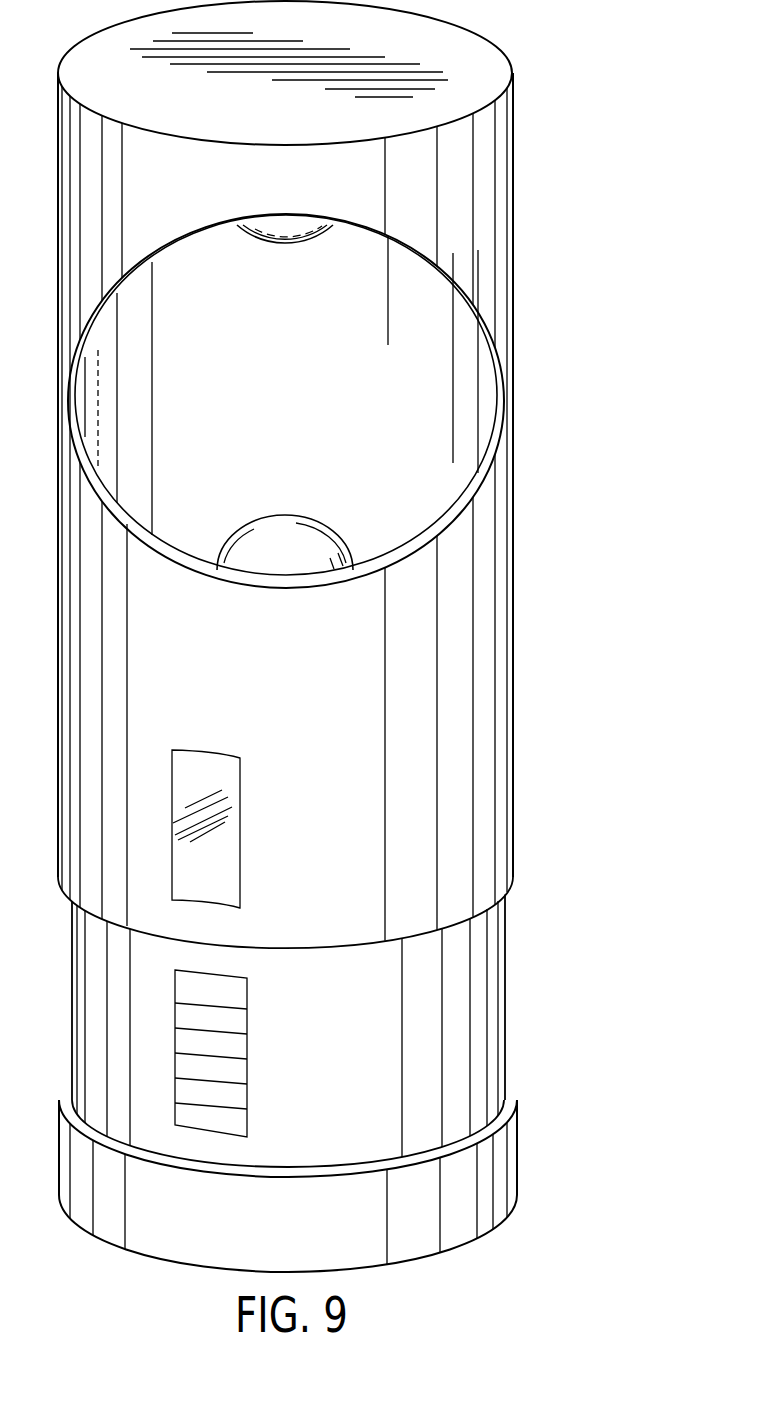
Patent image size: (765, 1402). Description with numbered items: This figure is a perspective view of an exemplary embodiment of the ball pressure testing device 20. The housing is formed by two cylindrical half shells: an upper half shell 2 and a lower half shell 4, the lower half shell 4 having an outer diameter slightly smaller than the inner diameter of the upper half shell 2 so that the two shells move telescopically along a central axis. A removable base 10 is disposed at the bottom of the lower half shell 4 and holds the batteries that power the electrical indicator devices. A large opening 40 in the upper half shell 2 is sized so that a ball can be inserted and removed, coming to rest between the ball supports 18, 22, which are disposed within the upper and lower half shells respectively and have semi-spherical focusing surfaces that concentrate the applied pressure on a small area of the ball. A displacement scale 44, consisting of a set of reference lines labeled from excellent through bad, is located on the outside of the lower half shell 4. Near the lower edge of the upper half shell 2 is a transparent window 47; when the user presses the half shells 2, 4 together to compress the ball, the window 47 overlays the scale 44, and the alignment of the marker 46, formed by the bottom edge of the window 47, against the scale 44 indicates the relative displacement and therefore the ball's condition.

The upper half shell 2 is at (469, 615).
The lower half shell 4 is at (475, 1035).
The removable base 10 is at (488, 1163).
The ball support 18 is at (273, 242).
The ball pressure testing device 20 is at (524, 212).
The ball support 22 is at (267, 535).
The opening 40 is at (438, 278).
The displacement scale 44 is at (245, 1043).
The marker 46 is at (227, 910).
The transparent window 47 is at (227, 780).